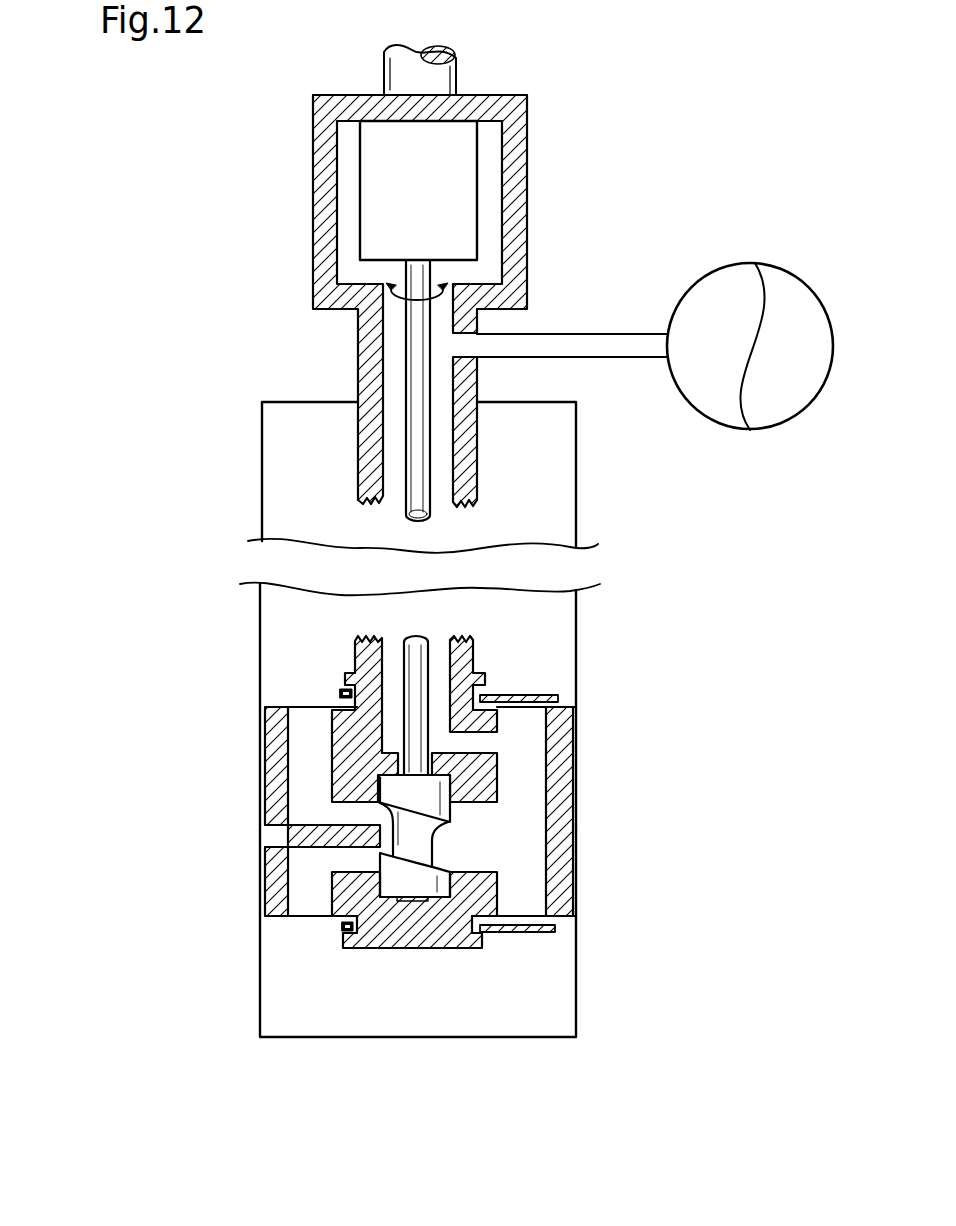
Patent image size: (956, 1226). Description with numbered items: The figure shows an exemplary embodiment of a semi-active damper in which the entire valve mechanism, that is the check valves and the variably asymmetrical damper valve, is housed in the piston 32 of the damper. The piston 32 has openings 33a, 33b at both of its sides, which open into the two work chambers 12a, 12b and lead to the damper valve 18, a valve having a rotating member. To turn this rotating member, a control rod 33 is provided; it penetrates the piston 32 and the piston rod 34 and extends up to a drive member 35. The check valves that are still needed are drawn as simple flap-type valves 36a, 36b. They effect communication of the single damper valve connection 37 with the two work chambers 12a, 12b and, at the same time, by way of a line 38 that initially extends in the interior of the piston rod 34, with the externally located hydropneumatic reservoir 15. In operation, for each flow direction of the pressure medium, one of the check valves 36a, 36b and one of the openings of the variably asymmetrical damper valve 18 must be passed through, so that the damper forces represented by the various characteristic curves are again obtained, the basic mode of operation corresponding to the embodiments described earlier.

The work chamber 12a is at (280, 645).
The work chamber 12b is at (262, 976).
The hydropneumatic reservoir 15 is at (718, 277).
The damper valve 18 is at (393, 900).
The piston 32 is at (275, 827).
The control rod 33 is at (404, 368).
The opening 33a is at (292, 742).
The opening 33b is at (292, 914).
The piston rod 34 is at (364, 434).
The drive member 35 is at (368, 199).
The flap-type valve 36a is at (547, 695).
The flap-type valve 36b is at (538, 930).
The damper valve connection 37 is at (480, 862).
The line 38 is at (448, 660).